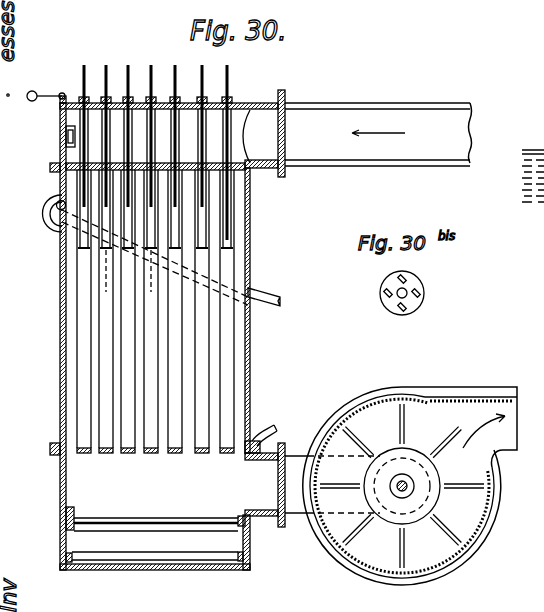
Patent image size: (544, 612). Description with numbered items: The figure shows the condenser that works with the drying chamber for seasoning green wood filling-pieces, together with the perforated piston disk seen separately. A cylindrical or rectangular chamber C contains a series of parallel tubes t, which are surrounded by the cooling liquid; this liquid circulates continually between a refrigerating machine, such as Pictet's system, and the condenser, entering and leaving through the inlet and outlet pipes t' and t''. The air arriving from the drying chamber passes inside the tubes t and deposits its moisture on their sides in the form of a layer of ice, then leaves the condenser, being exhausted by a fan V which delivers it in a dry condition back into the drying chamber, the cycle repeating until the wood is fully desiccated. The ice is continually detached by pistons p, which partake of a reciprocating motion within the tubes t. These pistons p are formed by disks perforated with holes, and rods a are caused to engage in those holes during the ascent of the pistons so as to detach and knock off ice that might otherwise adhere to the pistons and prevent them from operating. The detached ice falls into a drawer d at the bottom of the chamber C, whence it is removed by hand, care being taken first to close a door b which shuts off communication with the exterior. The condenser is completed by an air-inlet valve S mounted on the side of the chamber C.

In FIG. 30, the air-inlet valve S is at (58, 136).
In FIG. 30, the rods a is at (168, 141).
In FIG. 30, the outlet pipe t'' is at (44, 213).
In FIG. 30, the pistons p is at (126, 282).
In FIG. 30bis, the pistons p is at (423, 292).
In FIG. 30, the tubes t is at (155, 259).
In FIG. 30, the chamber C is at (150, 348).
In FIG. 30, the inlet pipe t' is at (264, 423).
In FIG. 30, the door b is at (156, 516).
In FIG. 30, the drawer d is at (155, 552).
In FIG. 30, the fan V is at (410, 486).